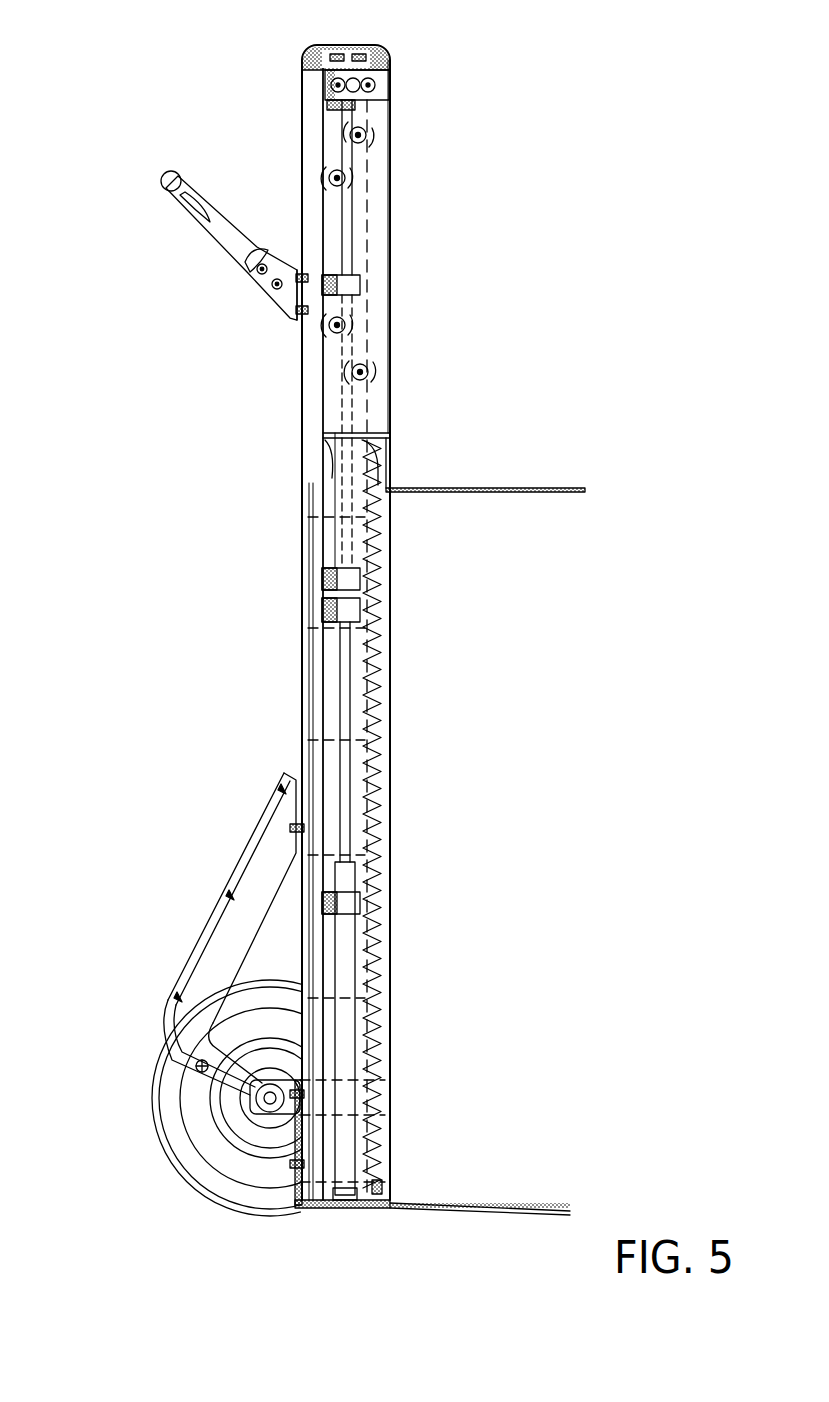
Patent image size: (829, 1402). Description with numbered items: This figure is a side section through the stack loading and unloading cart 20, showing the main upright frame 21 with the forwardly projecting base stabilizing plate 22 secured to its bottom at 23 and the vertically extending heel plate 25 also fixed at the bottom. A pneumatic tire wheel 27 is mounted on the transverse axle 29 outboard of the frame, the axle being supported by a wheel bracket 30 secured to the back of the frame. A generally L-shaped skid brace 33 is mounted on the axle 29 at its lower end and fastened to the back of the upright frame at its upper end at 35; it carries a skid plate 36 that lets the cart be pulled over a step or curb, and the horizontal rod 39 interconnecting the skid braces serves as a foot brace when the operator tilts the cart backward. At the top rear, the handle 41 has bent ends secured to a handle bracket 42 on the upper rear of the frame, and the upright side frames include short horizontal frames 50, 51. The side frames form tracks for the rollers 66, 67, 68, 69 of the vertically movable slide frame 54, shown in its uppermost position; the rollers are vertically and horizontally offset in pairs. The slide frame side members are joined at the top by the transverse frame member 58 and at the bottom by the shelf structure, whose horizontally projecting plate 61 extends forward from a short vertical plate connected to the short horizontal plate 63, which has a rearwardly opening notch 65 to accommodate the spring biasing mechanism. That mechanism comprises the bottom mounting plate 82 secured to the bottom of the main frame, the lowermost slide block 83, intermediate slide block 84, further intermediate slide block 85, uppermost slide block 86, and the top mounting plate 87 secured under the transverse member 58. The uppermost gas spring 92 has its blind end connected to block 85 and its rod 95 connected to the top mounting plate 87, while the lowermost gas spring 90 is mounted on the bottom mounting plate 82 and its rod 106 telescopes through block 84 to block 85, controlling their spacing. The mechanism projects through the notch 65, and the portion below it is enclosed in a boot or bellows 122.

The stack loading and unloading cart 20 is at (405, 608).
The main upright frame 21 is at (392, 735).
The base stabilizing plate 22 is at (492, 1213).
The securement of base plate 23 is at (380, 1210).
The heel plate 25 is at (300, 1140).
The pneumatic tire wheel 27 is at (180, 1165).
The transverse axle 29 is at (252, 1094).
The wheel bracket 30 is at (300, 1203).
The skid brace 33 is at (188, 1041).
The skid brace fastening 35 is at (305, 828).
The skid plate 36 is at (208, 925).
The horizontal rod 39 is at (196, 1067).
The handle 41 is at (196, 245).
The handle bracket 42 is at (290, 310).
The short horizontal frame 50 is at (352, 44).
The short horizontal frame 51 is at (340, 1212).
The slide frame 54 is at (410, 332).
The transverse frame member 58 is at (393, 84).
The horizontally projecting plate 61 is at (540, 480).
The short horizontal plate 63 is at (388, 419).
The notch 65 is at (325, 425).
The roller 66 is at (370, 136).
The roller 67 is at (346, 176).
The roller 68 is at (333, 328).
The roller 69 is at (372, 379).
The bottom mounting plate 82 is at (378, 1182).
The lowermost slide block 83 is at (360, 903).
The intermediate slide block 84 is at (362, 618).
The further intermediate slide block 85 is at (360, 575).
The uppermost slide block 86 is at (362, 283).
The top mounting plate 87 is at (327, 98).
The lowermost gas spring 90 is at (345, 1036).
The uppermost gas spring 92 is at (372, 535).
The rod 95 is at (355, 230).
The rod 106 is at (345, 767).
The boot or bellows 122 is at (372, 945).